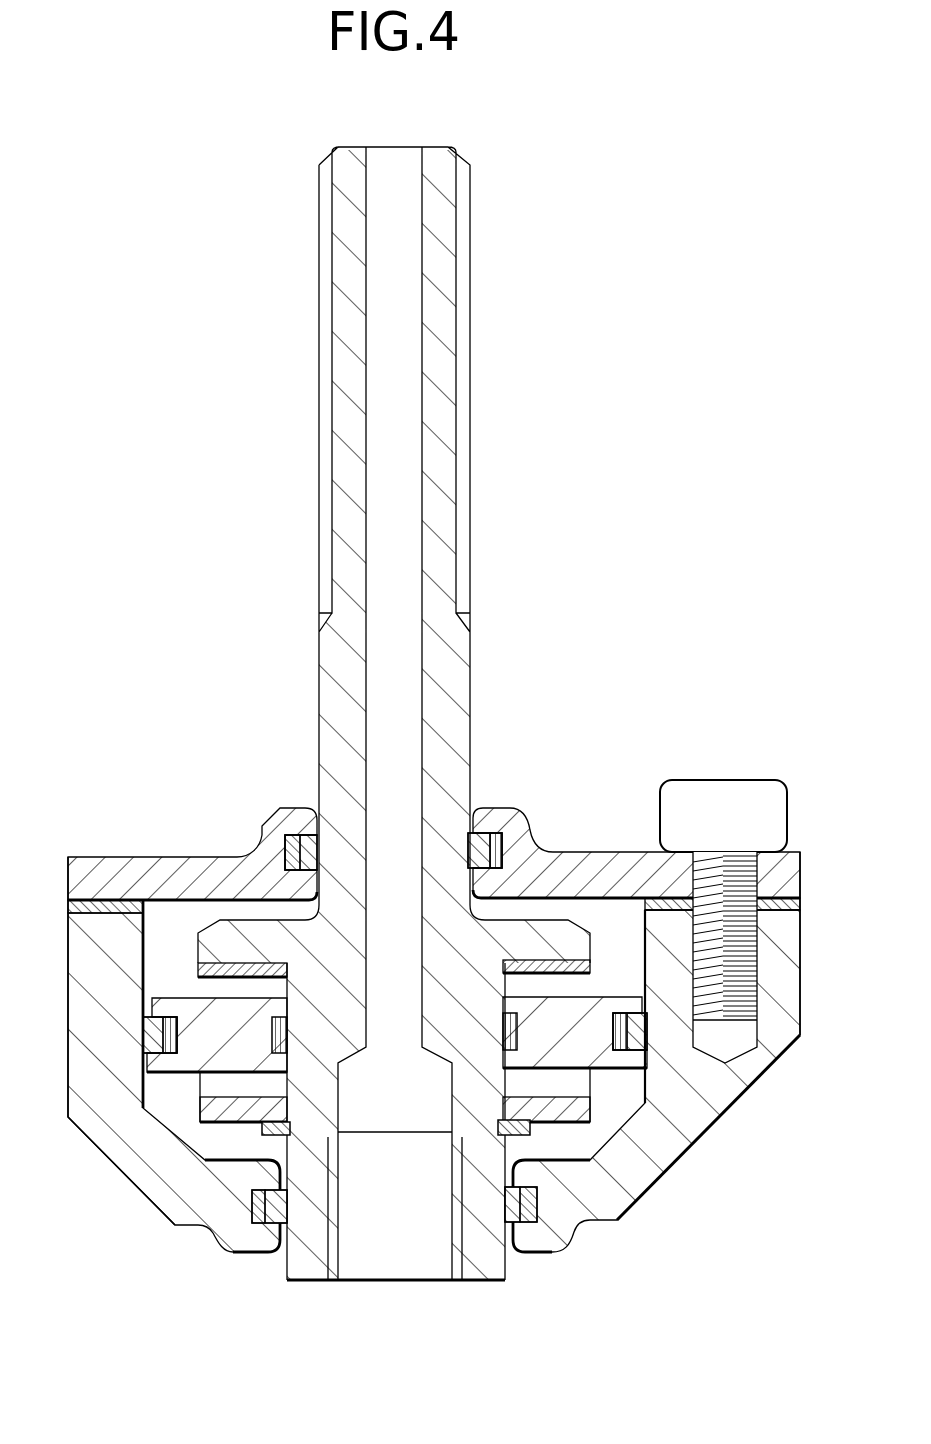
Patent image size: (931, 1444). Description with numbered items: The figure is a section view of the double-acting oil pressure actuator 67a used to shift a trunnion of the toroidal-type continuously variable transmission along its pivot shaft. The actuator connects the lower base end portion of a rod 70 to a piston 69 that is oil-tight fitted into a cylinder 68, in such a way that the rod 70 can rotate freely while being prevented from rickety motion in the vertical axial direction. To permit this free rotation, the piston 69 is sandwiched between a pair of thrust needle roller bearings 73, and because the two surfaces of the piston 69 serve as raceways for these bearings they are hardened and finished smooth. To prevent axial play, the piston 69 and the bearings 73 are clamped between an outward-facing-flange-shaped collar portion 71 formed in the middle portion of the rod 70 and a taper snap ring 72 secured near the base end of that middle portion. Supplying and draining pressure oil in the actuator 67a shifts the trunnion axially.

The rod 70 is at (455, 670).
The collar portion 71 is at (562, 932).
The thrust needle roller bearing 73 is at (578, 1085).
The piston 69 is at (170, 1067).
The taper snap ring 72 is at (263, 1130).
The second oil pressure actuator 67a is at (693, 1117).
The cylinder 68 is at (625, 1188).